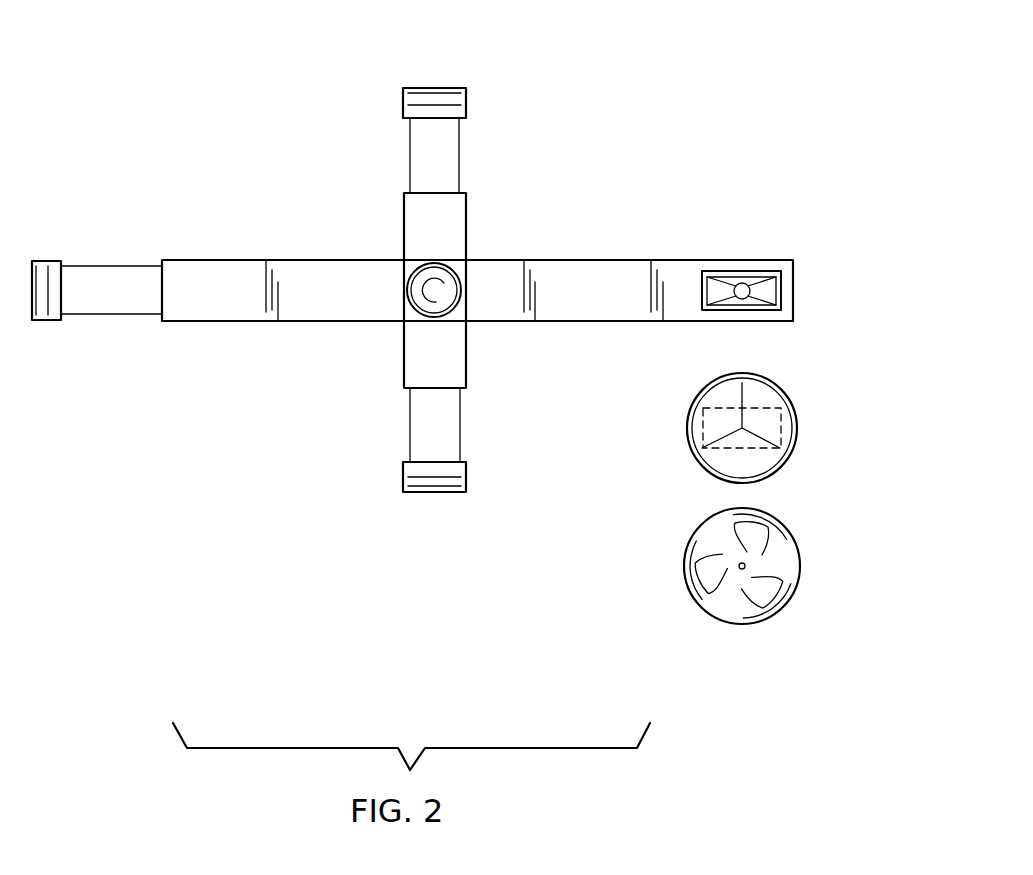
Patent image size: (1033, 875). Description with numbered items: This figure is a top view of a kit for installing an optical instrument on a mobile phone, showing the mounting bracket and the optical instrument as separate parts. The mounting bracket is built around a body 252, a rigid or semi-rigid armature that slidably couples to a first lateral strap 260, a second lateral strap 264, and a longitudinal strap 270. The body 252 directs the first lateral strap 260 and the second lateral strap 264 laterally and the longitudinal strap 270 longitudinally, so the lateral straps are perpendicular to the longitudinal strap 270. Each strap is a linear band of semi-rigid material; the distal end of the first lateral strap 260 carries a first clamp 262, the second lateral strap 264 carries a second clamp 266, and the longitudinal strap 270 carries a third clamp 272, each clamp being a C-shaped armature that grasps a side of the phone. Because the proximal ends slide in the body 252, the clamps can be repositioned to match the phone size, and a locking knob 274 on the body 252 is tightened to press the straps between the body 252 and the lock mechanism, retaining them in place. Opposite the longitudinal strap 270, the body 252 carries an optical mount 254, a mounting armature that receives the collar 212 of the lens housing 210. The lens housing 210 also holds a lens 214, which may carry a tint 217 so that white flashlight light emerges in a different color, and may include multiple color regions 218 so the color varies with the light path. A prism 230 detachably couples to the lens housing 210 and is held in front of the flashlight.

The lens housing 210 is at (762, 423).
The collar 212 is at (705, 468).
The lens 214 is at (722, 398).
The tint 217 is at (758, 397).
The color regions 218 is at (745, 463).
The prism 230 is at (849, 517).
The body 252 is at (304, 275).
The optical mount 254 is at (743, 271).
The first lateral strap 260 is at (447, 147).
The first clamp 262 is at (428, 100).
The second lateral strap 264 is at (418, 421).
The second clamp 266 is at (435, 485).
The longitudinal strap 270 is at (109, 305).
The third clamp 272 is at (45, 312).
The locking knob 274 is at (458, 312).